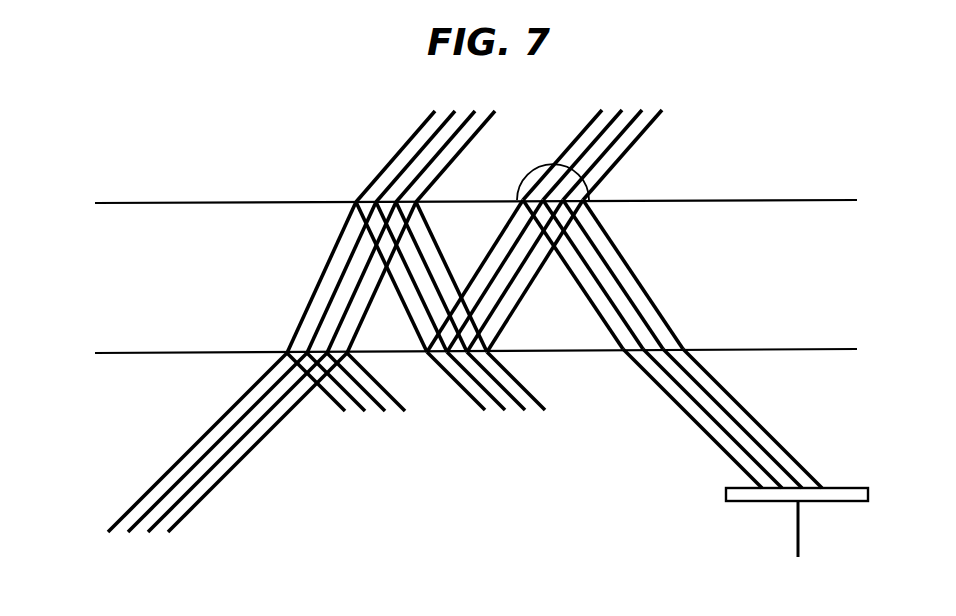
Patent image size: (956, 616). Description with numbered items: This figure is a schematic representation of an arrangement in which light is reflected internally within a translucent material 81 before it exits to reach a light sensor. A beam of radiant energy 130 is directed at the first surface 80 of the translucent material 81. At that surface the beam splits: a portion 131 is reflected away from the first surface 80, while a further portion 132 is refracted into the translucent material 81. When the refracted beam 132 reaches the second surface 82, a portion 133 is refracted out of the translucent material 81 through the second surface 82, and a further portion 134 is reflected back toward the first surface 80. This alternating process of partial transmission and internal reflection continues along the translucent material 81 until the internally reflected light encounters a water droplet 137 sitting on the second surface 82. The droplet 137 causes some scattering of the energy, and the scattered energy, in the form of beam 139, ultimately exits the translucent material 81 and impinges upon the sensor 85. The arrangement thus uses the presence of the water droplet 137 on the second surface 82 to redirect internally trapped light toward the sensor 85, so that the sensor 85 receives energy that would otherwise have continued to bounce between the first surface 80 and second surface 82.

The first surface 80 is at (208, 353).
The translucent material 81 is at (107, 280).
The second surface 82 is at (193, 202).
The sensor 85 is at (847, 502).
The beam of radiant energy 130 is at (213, 471).
The reflected portion 131 is at (343, 398).
The refracted portion 132 is at (337, 265).
The refracted-out portion 133 is at (402, 153).
The reflected-back portion 134 is at (423, 245).
The water droplet 137 is at (530, 178).
The scattered beam 139 is at (634, 270).